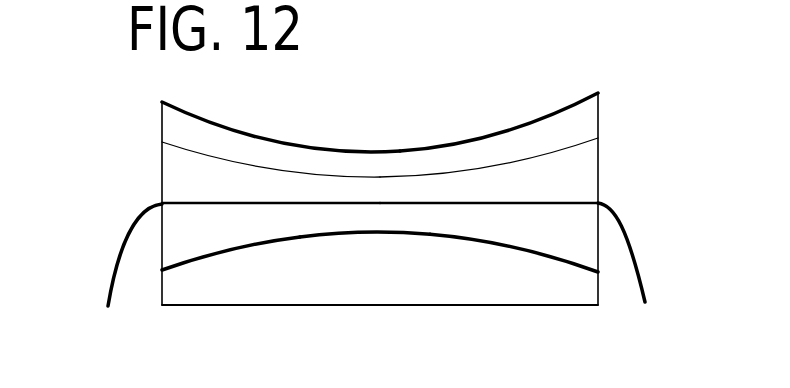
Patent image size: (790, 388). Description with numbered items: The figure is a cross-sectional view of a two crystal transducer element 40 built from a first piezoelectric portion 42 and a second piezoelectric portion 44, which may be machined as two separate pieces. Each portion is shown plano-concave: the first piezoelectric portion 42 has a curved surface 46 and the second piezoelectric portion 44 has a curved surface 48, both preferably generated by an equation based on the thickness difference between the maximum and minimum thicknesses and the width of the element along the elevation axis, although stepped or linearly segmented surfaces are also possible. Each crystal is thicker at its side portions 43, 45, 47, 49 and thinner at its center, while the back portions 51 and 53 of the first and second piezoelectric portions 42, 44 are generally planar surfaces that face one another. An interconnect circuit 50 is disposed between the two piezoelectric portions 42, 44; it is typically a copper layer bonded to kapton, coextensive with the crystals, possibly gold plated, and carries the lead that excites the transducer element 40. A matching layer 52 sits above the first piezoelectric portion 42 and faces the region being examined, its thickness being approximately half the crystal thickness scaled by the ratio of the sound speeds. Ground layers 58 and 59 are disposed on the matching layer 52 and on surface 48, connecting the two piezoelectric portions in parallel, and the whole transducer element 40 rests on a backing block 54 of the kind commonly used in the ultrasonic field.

The two crystal transducer element 40 is at (148, 178).
The first piezoelectric portion 42 is at (579, 183).
The side portion 43 is at (598, 159).
The second piezoelectric portion 44 is at (514, 232).
The side portion 45 is at (162, 175).
The surface 46 is at (218, 158).
The side portion 47 is at (597, 218).
The surface 48 is at (370, 232).
The side portion 49 is at (162, 243).
The interconnect circuit 50 is at (632, 247).
The back portion 51 is at (330, 203).
The matching layer 52 is at (478, 142).
The back portion 53 is at (290, 204).
The backing block 54 is at (546, 305).
The ground layer 58 is at (497, 247).
The ground layer 59 is at (535, 123).